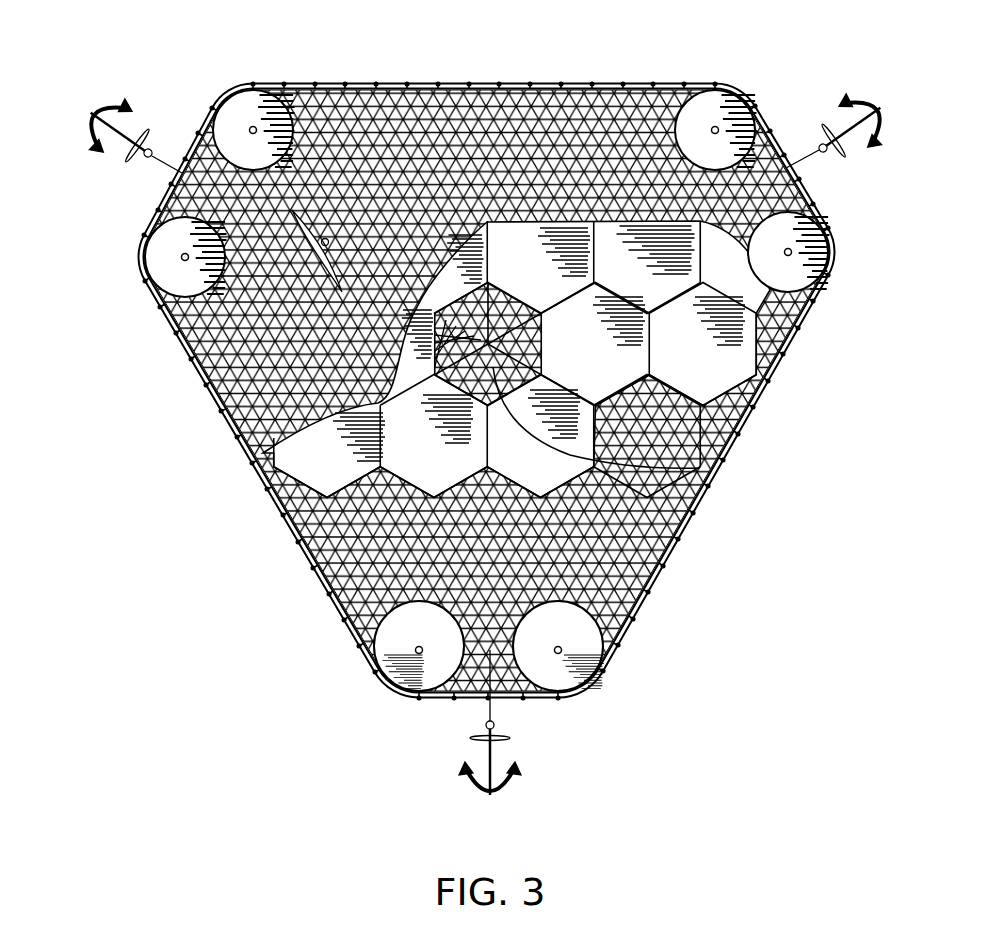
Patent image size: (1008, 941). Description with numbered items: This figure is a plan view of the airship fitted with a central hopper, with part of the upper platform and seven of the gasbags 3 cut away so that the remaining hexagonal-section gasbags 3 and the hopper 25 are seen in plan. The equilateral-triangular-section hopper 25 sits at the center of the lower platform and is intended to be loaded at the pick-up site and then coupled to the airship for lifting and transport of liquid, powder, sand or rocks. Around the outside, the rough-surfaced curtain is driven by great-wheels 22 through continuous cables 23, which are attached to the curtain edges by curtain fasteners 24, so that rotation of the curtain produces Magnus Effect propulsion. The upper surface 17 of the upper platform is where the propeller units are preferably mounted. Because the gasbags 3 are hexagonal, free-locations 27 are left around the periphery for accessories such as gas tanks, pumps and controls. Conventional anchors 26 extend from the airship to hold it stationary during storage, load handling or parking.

The gasbags 3 is at (707, 382).
The upper surface 17 is at (380, 138).
The great-wheels 22 is at (246, 108).
The continuous cables 23 is at (423, 84).
The curtain fasteners 24 is at (506, 84).
The hopper 25 is at (700, 468).
The anchors 26 is at (138, 137).
The free-locations 27 is at (763, 333).